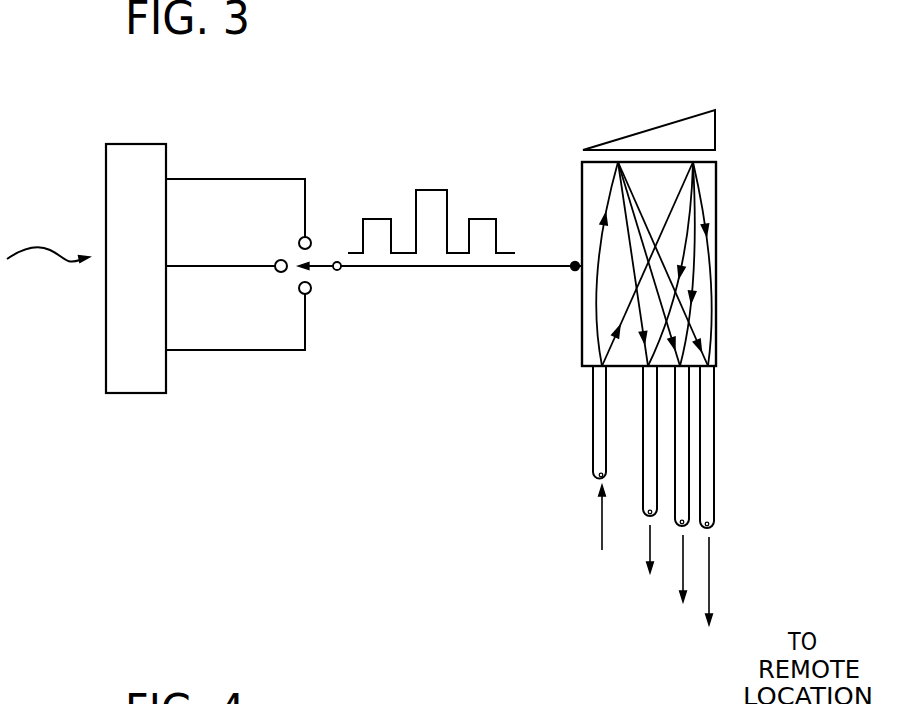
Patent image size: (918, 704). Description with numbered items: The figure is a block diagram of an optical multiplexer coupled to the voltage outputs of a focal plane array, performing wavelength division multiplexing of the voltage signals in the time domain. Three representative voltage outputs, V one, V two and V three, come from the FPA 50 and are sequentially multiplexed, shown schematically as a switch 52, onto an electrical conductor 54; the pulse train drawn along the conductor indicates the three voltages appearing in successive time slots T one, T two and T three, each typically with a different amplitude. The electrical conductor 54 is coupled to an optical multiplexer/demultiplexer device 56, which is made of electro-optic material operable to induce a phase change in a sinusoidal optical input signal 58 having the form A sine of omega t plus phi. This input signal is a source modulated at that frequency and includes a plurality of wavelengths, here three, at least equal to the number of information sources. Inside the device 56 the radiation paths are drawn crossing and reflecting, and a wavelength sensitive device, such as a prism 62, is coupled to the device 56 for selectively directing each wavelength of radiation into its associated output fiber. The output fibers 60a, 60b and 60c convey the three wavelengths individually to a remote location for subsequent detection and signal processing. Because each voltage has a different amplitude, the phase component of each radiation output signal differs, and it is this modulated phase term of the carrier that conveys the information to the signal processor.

The FPA 50 is at (166, 375).
The switch 52 is at (308, 238).
The electrical conductor 54 is at (533, 268).
The optical multiplexer/demultiplexer device 56 is at (716, 313).
The sinusoidal optical input signal 58 is at (593, 438).
The output fiber 60a is at (657, 403).
The output fiber 60b is at (689, 437).
The output fiber 60c is at (714, 468).
The prism 62 is at (625, 140).